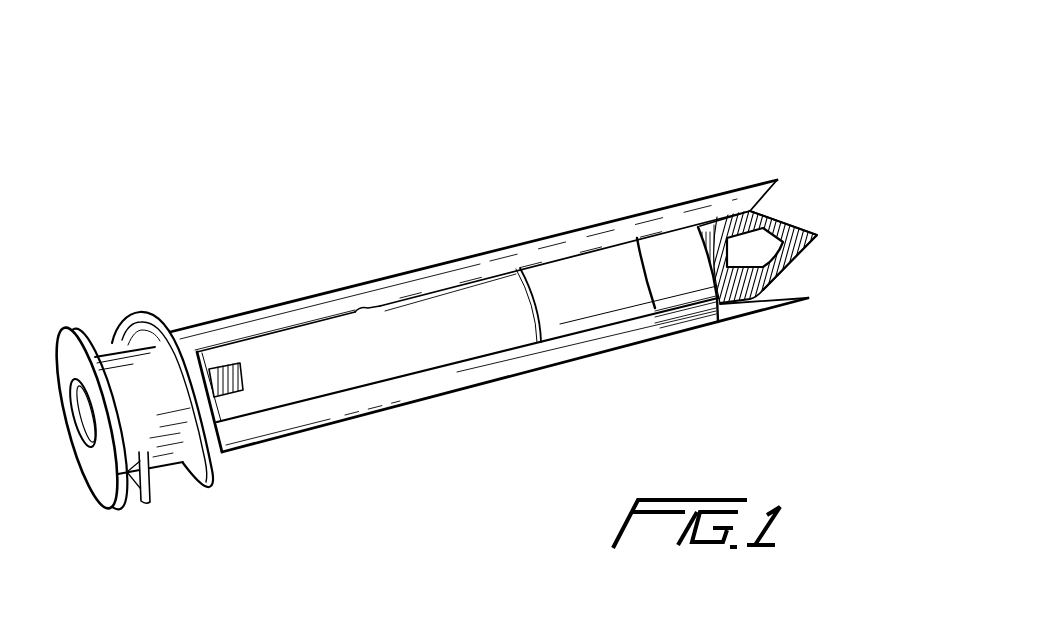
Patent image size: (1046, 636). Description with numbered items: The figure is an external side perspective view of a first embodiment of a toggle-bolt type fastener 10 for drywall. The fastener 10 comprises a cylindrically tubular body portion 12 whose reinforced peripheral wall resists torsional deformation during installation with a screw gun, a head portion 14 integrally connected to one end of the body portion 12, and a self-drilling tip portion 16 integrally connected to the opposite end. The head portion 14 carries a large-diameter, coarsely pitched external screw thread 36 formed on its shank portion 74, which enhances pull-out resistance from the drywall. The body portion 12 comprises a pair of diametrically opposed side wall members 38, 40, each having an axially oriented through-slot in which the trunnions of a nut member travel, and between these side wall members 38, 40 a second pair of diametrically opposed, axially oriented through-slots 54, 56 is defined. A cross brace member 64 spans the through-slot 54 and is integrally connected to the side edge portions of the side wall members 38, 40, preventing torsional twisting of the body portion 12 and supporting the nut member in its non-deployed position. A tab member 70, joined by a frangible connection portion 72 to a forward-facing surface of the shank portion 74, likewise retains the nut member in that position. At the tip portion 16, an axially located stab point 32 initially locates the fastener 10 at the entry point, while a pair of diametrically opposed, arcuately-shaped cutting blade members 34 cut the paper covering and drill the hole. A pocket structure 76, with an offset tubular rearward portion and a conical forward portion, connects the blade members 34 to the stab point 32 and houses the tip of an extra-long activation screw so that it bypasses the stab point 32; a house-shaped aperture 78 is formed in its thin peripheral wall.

The toggle-bolt type fastener 10 is at (515, 194).
The body portion 12 is at (418, 269).
The head portion 14 is at (118, 508).
The self-drilling tip portion 16 is at (740, 188).
The stab point 32 is at (822, 236).
The cutting blade members 34 is at (773, 180).
The external screw thread 36 is at (152, 313).
The side wall member 38 is at (435, 382).
The side wall member 40 is at (373, 290).
The through-slot 54 is at (318, 370).
The through-slot 56 is at (330, 482).
The cross brace member 64 is at (583, 295).
The tab member 70 is at (231, 365).
The frangible connection portion 72 is at (221, 371).
The shank portion 74 is at (180, 460).
The pocket structure 76 is at (733, 320).
The aperture 78 is at (765, 241).